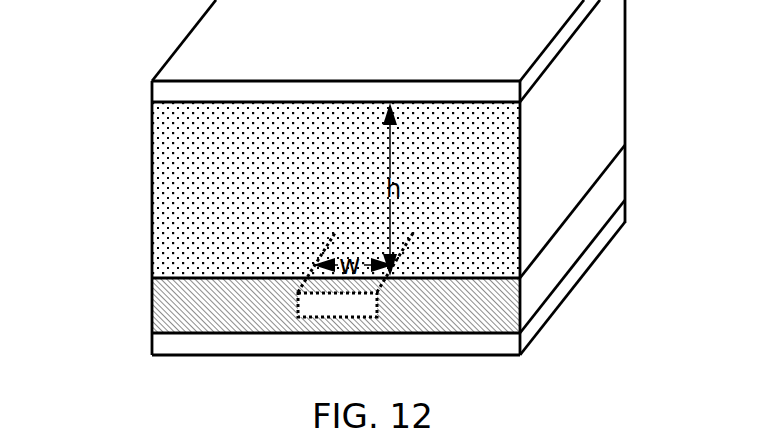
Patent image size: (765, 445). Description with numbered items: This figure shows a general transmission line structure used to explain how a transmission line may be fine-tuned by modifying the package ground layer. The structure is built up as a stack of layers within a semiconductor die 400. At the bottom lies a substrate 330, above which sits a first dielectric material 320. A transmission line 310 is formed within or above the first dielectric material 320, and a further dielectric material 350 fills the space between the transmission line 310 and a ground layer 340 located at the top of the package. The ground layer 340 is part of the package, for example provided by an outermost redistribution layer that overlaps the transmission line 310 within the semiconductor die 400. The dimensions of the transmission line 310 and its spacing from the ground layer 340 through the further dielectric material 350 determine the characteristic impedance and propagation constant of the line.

The transmission line 310 is at (337, 303).
The first dielectric material 320 is at (162, 299).
The substrate 330 is at (150, 343).
The ground layer 340 is at (534, 84).
The further dielectric material 350 is at (357, 188).
The semiconductor die 400 is at (527, 289).